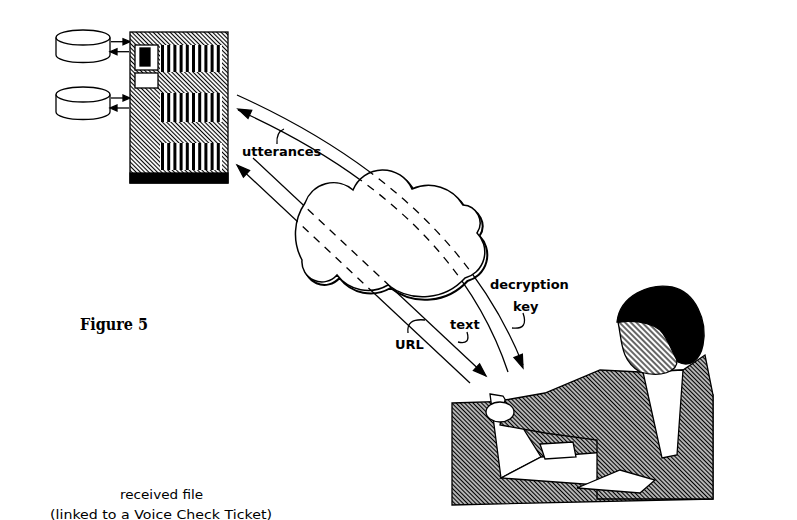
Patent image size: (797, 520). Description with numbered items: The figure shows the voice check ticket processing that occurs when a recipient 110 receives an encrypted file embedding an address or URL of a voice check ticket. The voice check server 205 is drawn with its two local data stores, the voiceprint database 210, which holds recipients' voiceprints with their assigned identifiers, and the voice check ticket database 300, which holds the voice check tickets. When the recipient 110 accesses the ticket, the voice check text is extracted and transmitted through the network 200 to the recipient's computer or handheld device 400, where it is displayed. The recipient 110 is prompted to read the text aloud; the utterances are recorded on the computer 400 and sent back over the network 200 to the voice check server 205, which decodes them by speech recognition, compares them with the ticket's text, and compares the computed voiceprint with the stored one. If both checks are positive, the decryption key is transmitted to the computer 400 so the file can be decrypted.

The recipient 110 is at (710, 432).
The network 200 is at (293, 259).
The voice check server 205 is at (182, 30).
The voiceprint database 210 is at (53, 47).
The voice check ticket database 300 is at (53, 106).
The recipient's computer or handheld device 400 is at (528, 473).